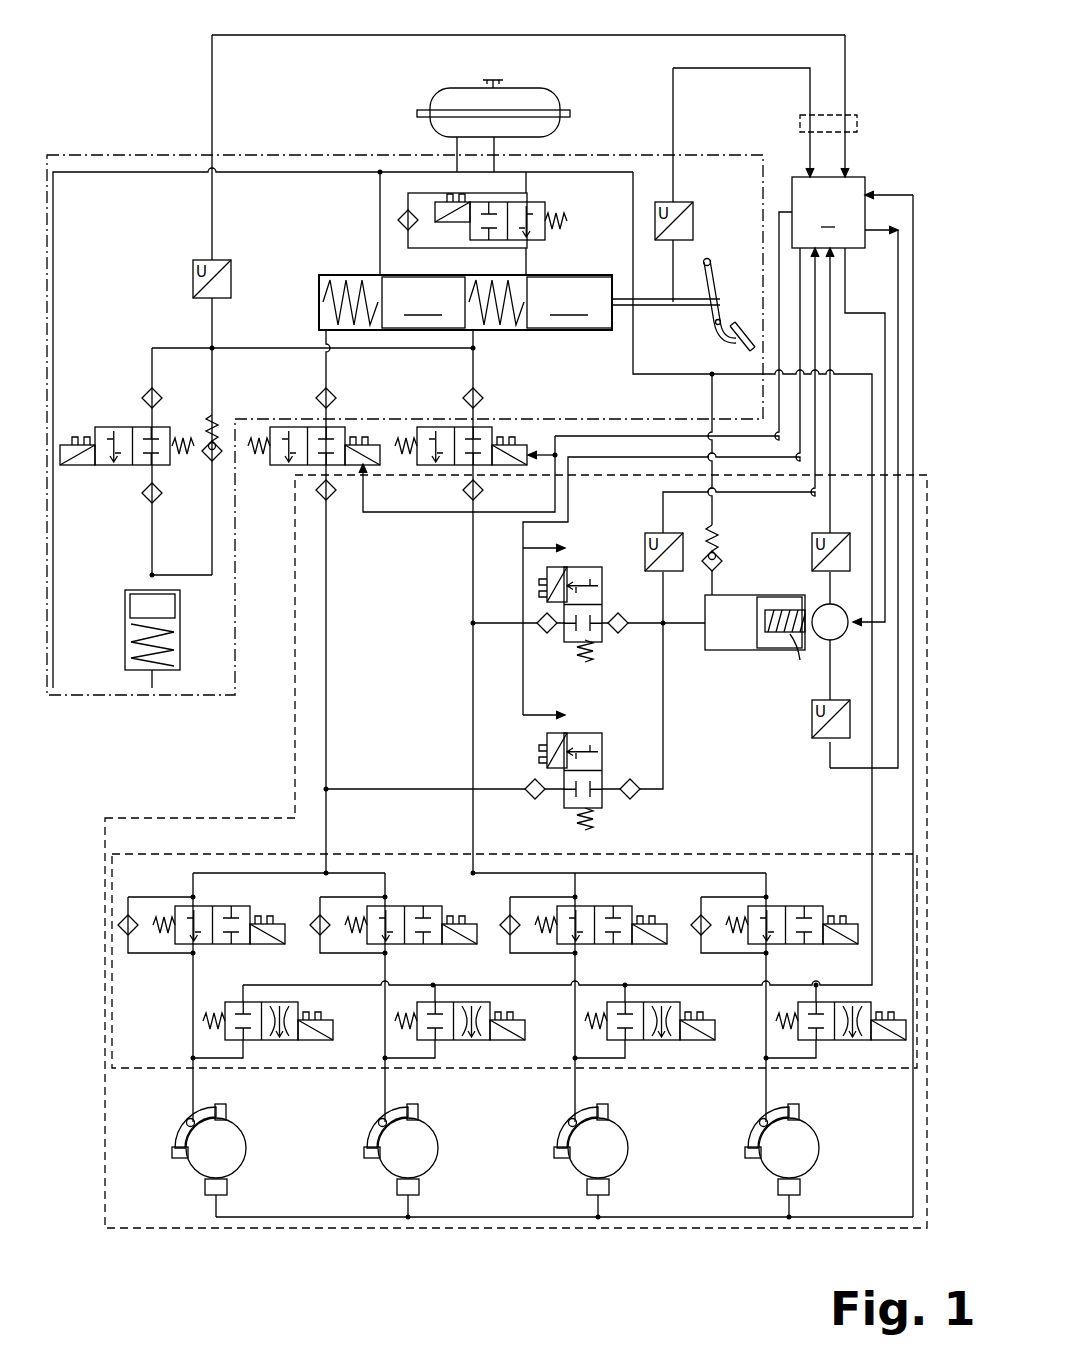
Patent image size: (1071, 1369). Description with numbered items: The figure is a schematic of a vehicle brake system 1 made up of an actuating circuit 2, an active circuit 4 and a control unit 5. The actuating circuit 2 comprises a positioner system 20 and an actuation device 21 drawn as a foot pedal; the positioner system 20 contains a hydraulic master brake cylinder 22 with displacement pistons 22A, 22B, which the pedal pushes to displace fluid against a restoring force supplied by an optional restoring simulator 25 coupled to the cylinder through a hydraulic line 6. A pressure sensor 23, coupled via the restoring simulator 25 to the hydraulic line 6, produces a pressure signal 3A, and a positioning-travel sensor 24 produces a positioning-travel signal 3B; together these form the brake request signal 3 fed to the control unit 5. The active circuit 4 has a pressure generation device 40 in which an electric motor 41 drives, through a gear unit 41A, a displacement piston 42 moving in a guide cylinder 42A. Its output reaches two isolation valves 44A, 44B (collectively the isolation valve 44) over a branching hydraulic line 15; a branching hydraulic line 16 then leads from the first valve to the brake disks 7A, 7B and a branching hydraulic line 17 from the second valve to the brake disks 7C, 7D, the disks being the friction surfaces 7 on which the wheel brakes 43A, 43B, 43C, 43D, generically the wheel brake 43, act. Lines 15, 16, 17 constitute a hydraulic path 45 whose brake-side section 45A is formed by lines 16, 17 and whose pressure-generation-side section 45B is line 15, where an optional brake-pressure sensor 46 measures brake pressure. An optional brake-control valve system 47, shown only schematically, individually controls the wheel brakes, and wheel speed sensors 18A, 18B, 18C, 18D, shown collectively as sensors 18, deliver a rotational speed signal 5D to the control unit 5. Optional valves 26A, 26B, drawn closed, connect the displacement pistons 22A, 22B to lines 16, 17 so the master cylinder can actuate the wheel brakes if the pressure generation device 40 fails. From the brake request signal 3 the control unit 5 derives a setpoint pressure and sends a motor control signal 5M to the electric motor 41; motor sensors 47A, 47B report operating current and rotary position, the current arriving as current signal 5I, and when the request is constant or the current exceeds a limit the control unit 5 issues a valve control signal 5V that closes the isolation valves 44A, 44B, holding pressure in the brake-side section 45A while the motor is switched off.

The brake system 1 is at (84, 85).
The actuating circuit 2 is at (90, 700).
The brake request signal 3 is at (855, 115).
The pressure signal 3A is at (215, 213).
The positioning-travel signal 3B is at (673, 100).
The active circuit 4 is at (128, 818).
The control unit 5 is at (699, 658).
The rotational speed signal 5D is at (866, 1228).
The current signal 5I is at (850, 768).
The motor control signal 5M is at (862, 313).
The valve control signal 5V is at (523, 590).
The hydraulic line 6 is at (152, 360).
The brake disk 7 is at (515, 1046).
The brake disk 7A is at (277, 1045).
The brake disk 7B is at (417, 1045).
The brake disk 7C is at (607, 1045).
The brake disk 7D is at (799, 1045).
The branching hydraulic line 15 is at (690, 623).
The branching hydraulic line 16 is at (328, 816).
The branching hydraulic line 17 is at (473, 828).
The wheel speed sensors 18 is at (515, 1046).
The wheel speed sensor 18A is at (250, 1187).
The wheel speed sensor 18B is at (442, 1187).
The wheel speed sensor 18C is at (632, 1187).
The wheel speed sensor 18D is at (823, 1187).
The positioner system 20 is at (160, 270).
The actuation device 21 is at (716, 278).
The hydraulic master brake cylinder 22 is at (507, 251).
The displacement piston 22A is at (423, 302).
The displacement piston 22B is at (569, 302).
The pressure sensor 23 is at (200, 258).
The positioning-travel sensor 24 is at (693, 212).
The restoring simulator 25 is at (125, 634).
The valve 26A is at (272, 466).
The valve 26B is at (418, 466).
The pressure generation device 40 is at (766, 565).
The electric motor 41 is at (846, 610).
The gear unit 41A is at (808, 661).
The displacement piston 42 is at (755, 640).
The guide cylinder 42A is at (742, 650).
The wheel brake 43 is at (515, 1046).
The wheel brake 43A is at (216, 1108).
The wheel brake 43B is at (408, 1108).
The wheel brake 43C is at (598, 1108).
The wheel brake 43D is at (789, 1108).
The isolation valve 44 is at (624, 664).
The isolation valve 44A is at (604, 806).
The isolation valve 44B is at (603, 575).
The hydraulic path 45 is at (515, 706).
The brake-side section 45A is at (500, 626).
The pressure-generation-side section 45B is at (690, 626).
The brake-pressure sensor 46 is at (645, 563).
The brake-control valve system 47 is at (166, 854).
The motor sensor 47A is at (822, 742).
The motor sensor 47B is at (812, 554).